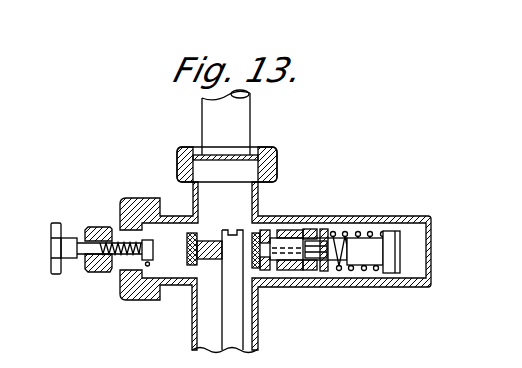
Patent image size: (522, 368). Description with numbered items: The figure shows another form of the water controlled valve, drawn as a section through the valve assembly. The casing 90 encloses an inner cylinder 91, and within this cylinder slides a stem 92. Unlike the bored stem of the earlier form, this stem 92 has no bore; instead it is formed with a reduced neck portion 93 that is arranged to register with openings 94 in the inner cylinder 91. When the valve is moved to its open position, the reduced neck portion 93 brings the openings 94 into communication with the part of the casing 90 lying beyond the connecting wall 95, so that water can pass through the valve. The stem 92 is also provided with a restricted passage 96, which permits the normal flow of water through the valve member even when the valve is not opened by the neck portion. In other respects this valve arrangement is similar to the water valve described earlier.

The casing 90 is at (333, 230).
The inner cylinder 91 is at (326, 231).
The stem 92 is at (367, 256).
The reduced neck portion 93 is at (328, 253).
The openings 94 is at (310, 231).
The connecting wall 95 is at (287, 222).
The restricted passage 96 is at (323, 250).